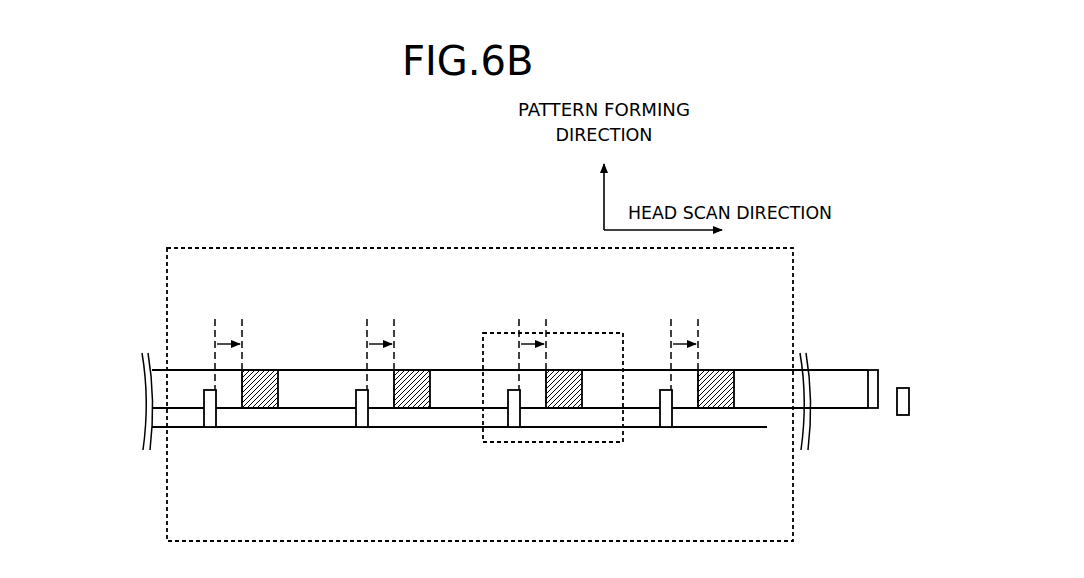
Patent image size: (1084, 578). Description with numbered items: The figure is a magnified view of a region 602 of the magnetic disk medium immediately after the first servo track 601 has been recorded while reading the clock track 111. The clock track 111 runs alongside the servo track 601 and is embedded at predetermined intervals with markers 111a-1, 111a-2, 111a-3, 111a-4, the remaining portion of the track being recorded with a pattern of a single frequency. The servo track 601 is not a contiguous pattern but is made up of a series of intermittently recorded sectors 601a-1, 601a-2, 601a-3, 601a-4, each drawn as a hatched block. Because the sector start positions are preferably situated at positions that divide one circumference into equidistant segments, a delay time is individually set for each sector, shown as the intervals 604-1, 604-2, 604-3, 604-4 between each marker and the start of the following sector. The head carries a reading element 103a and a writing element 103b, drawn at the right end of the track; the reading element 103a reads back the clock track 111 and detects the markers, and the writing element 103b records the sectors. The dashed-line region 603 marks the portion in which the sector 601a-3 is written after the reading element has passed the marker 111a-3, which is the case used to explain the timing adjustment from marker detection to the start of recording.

The first servo track 601 is at (122, 353).
The clock track 111 is at (137, 402).
The region 602 is at (480, 248).
The dashed line region 603 is at (588, 442).
The delay time 604-1 is at (225, 344).
The delay time 604-2 is at (377, 344).
The delay time 604-3 is at (529, 344).
The delay time 604-4 is at (681, 344).
The sector 601a-1 is at (258, 370).
The sector 601a-2 is at (410, 370).
The sector 601a-3 is at (562, 370).
The sector 601a-4 is at (714, 370).
The marker 111a-1 is at (210, 427).
The marker 111a-2 is at (362, 427).
The marker 111a-3 is at (514, 427).
The marker 111a-4 is at (666, 427).
The reading element 103a is at (902, 388).
The writing element 103b is at (873, 370).